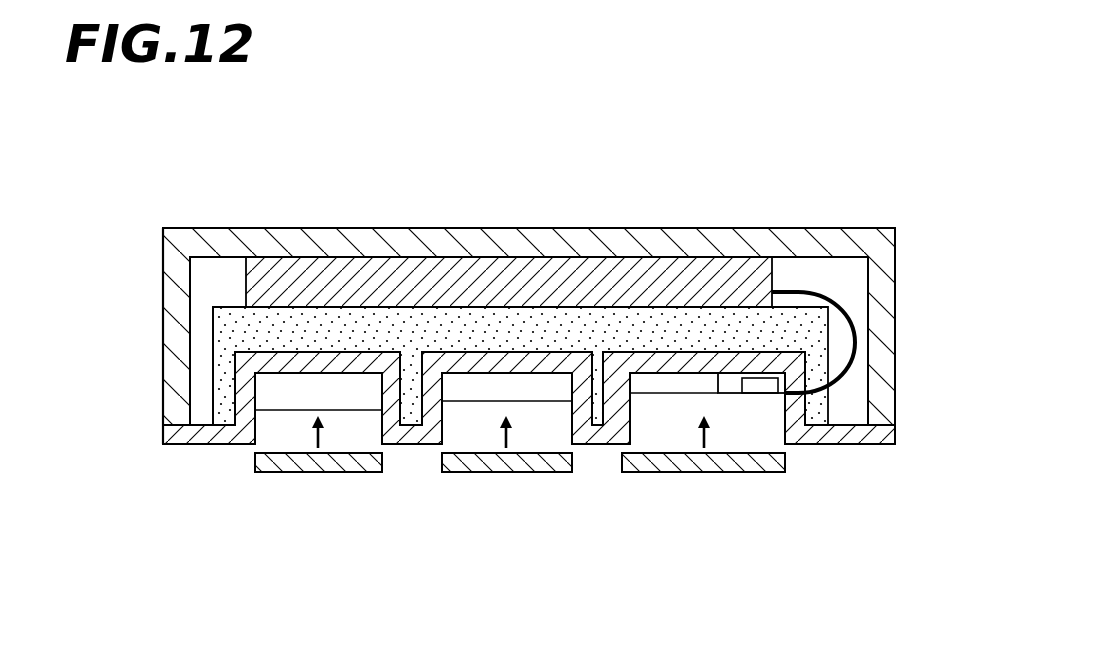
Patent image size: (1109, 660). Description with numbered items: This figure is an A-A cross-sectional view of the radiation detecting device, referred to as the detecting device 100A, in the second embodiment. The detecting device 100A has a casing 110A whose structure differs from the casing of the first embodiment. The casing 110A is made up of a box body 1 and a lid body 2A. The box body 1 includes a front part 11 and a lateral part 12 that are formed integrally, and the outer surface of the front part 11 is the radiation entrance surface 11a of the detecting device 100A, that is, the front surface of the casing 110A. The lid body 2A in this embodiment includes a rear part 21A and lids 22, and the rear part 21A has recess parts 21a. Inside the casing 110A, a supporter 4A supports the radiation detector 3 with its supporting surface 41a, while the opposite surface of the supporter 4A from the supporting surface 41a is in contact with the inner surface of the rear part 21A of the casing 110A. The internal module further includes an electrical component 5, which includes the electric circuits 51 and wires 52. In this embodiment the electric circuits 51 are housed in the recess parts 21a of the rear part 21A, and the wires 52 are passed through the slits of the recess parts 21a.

The detecting device 100A is at (556, 205).
The casing 110A is at (118, 250).
The box body 1 is at (160, 283).
The front part 11 is at (336, 228).
The radiation entrance surface 11a is at (465, 228).
The lateral part 12 is at (177, 408).
The lid body 2A is at (160, 435).
The rear part 21A is at (843, 449).
The recess parts 21a is at (257, 425).
The lids 22 is at (322, 472).
The radiation detector 3 is at (776, 277).
The supporter 4A is at (830, 325).
The supporting surface 41a is at (240, 306).
The electrical component 5 is at (859, 352).
The electric circuits 51 is at (332, 411).
The wires 52 is at (730, 396).